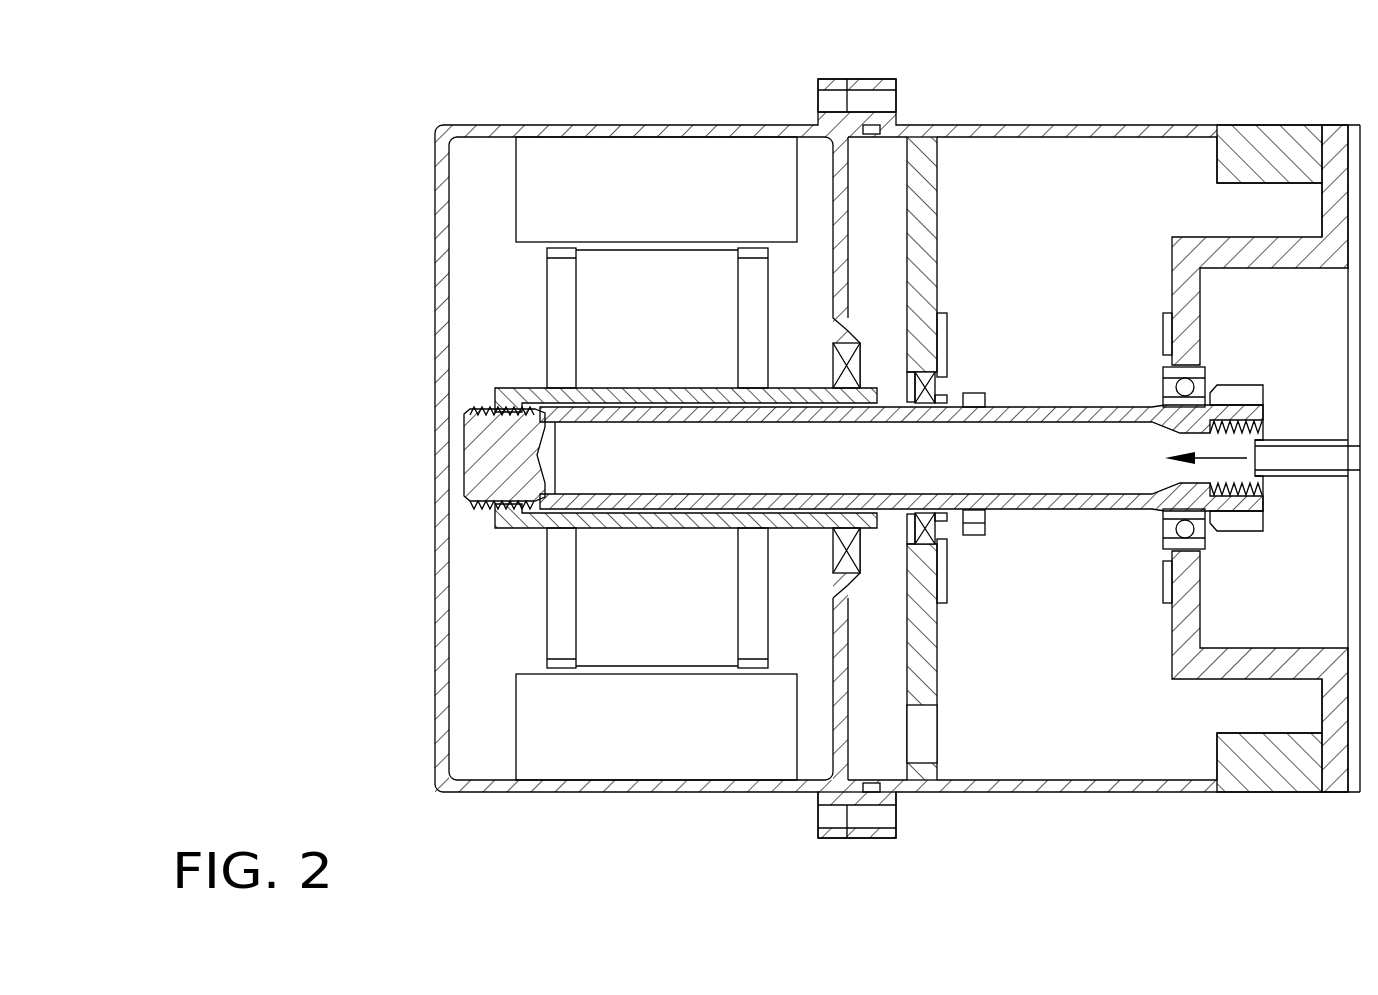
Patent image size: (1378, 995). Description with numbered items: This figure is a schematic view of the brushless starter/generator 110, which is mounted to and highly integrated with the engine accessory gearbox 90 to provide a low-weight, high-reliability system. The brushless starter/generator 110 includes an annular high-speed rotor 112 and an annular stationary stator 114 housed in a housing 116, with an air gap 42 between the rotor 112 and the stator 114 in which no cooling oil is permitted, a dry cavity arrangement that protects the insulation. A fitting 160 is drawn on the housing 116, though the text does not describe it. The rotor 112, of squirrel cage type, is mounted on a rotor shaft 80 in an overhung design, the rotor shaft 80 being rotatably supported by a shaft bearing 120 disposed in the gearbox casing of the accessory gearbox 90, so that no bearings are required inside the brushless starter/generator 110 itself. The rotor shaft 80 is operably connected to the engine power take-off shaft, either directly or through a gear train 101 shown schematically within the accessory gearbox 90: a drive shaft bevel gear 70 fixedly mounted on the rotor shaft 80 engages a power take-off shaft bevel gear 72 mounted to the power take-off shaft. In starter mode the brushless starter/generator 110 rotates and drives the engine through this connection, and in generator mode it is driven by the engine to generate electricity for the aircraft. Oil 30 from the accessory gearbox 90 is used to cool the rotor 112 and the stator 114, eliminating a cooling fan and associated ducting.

The brushless starter/generator 110 is at (516, 82).
The housing 116 is at (658, 125).
The fitting boss 160 is at (852, 80).
The stator 114 is at (672, 216).
The rotor 112 is at (672, 333).
The air gap 42 is at (645, 672).
The gear train 101 is at (988, 522).
The rotor shaft 80 is at (1045, 407).
The drive shaft bevel gear 70 is at (975, 393).
The power take-off shaft bevel gear 72 is at (975, 535).
The engine accessory gearbox 90 is at (1248, 102).
The shaft bearing 120 is at (1195, 382).
The oil 30 is at (1222, 460).